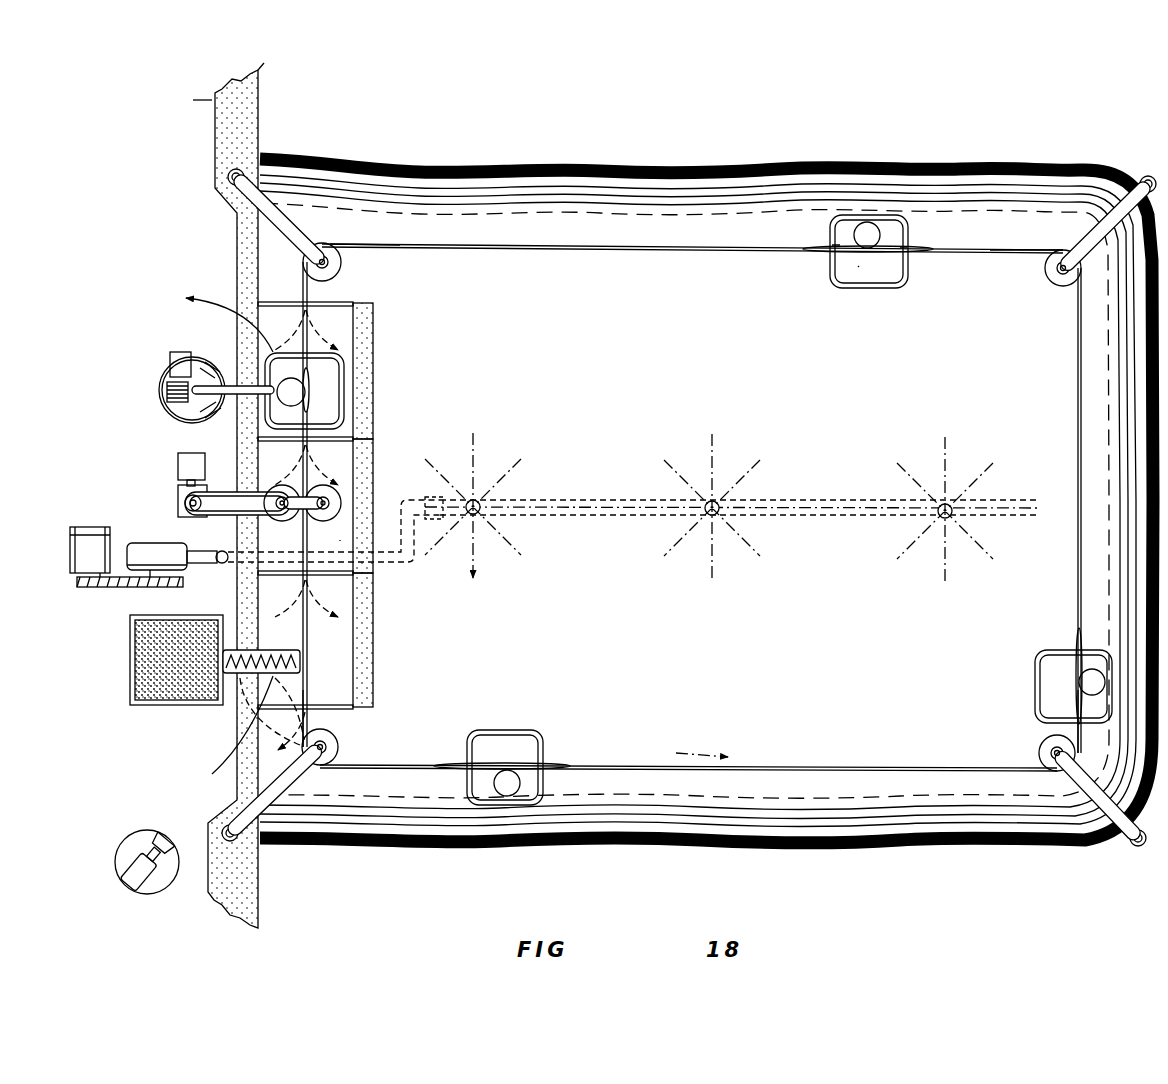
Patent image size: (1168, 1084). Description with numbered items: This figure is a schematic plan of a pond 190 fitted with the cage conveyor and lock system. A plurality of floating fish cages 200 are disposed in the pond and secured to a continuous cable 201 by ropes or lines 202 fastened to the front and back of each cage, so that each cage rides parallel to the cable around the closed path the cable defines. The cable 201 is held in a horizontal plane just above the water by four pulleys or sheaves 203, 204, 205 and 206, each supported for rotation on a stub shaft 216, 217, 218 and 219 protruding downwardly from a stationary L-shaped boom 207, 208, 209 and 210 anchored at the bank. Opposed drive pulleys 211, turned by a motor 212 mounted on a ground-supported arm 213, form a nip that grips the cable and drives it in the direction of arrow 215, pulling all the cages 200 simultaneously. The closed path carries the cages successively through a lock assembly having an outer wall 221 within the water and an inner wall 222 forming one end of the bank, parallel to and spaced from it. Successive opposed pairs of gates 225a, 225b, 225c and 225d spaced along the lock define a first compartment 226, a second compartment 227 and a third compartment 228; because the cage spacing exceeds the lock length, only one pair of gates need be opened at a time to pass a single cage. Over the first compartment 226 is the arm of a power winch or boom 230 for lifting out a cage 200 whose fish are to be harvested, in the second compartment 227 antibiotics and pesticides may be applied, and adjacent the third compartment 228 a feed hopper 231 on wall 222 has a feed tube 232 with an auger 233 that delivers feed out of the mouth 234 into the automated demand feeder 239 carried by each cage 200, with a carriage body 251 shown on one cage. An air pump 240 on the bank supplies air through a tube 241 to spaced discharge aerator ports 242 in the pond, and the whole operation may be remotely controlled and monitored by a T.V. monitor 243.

The pool 190 is at (770, 410).
The floating fish cage 200 is at (893, 294).
The continuous cable 201 is at (623, 253).
The rope or line 202 is at (832, 245).
The pulley or sheave 203 is at (341, 266).
The pulley or sheave 204 is at (348, 756).
The pulley or sheave 205 is at (1041, 753).
The pulley or sheave 206 is at (1060, 287).
The L-shaped boom 207 is at (299, 239).
The L-shaped boom 208 is at (299, 773).
The L-shaped boom 209 is at (1077, 774).
The L-shaped boom 210 is at (1128, 197).
The drive pulley 211 is at (338, 503).
The motor 212 is at (185, 478).
The arm 213 is at (217, 521).
The arrow 215 is at (678, 752).
The stub shaft 216 is at (332, 253).
The stub shaft 217 is at (294, 748).
The stub shaft 218 is at (1048, 739).
The stub shaft 219 is at (1067, 254).
The outer wall 221 is at (368, 416).
The inner wall 222 is at (242, 611).
The gates 225a is at (325, 307).
The gates 225b is at (343, 447).
The gates 225c is at (340, 580).
The gates 225d is at (340, 712).
The first compartment 226 is at (340, 339).
The second compartment 227 is at (338, 540).
The third compartment 228 is at (337, 676).
The power winch or boom 230 is at (222, 362).
The feed hopper 231 is at (132, 667).
The feed tube 232 is at (214, 772).
The auger 233 is at (219, 736).
The mouth 234 is at (299, 657).
The automated demand feeder 239 is at (862, 221).
The air pump 240 is at (140, 541).
The tube 241 is at (403, 578).
The discharge aerator port 242 is at (487, 503).
The T.V. monitor 243 is at (143, 847).
The carriage body 251 is at (858, 267).